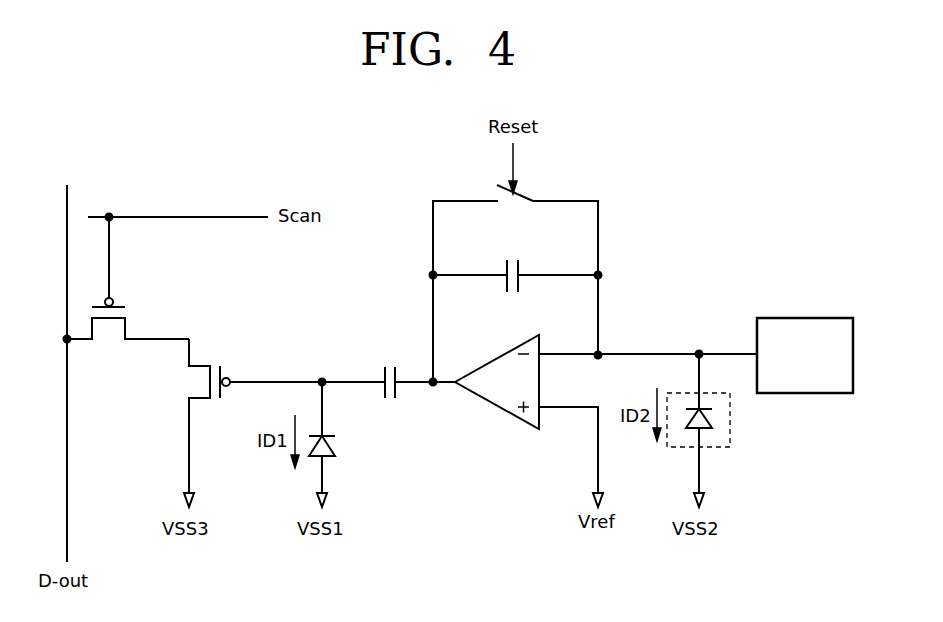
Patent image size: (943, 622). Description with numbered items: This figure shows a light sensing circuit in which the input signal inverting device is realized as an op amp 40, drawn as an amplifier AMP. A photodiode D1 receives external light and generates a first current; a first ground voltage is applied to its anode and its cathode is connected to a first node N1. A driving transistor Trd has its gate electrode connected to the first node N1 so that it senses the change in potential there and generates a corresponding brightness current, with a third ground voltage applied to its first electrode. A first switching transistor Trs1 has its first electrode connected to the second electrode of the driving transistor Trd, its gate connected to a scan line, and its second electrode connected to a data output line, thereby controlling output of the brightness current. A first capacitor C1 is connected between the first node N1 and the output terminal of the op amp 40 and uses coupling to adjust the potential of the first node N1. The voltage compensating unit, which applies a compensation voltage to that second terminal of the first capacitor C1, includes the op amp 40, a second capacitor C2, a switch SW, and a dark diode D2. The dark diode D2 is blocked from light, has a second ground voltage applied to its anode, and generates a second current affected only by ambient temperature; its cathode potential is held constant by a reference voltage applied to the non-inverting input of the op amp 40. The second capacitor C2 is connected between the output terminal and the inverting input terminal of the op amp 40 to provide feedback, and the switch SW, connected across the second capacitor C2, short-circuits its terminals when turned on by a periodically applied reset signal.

The op amp 40 is at (495, 407).
The first switching transistor Trs1 is at (127, 292).
The driving transistor Trd is at (266, 423).
The first node N1 is at (322, 368).
The photodiode D1 is at (339, 444).
The dark diode D2 is at (717, 430).
The first capacitor C1 is at (418, 368).
The second capacitor C2 is at (515, 261).
The switch SW is at (488, 187).
The amplifier AMP is at (805, 355).